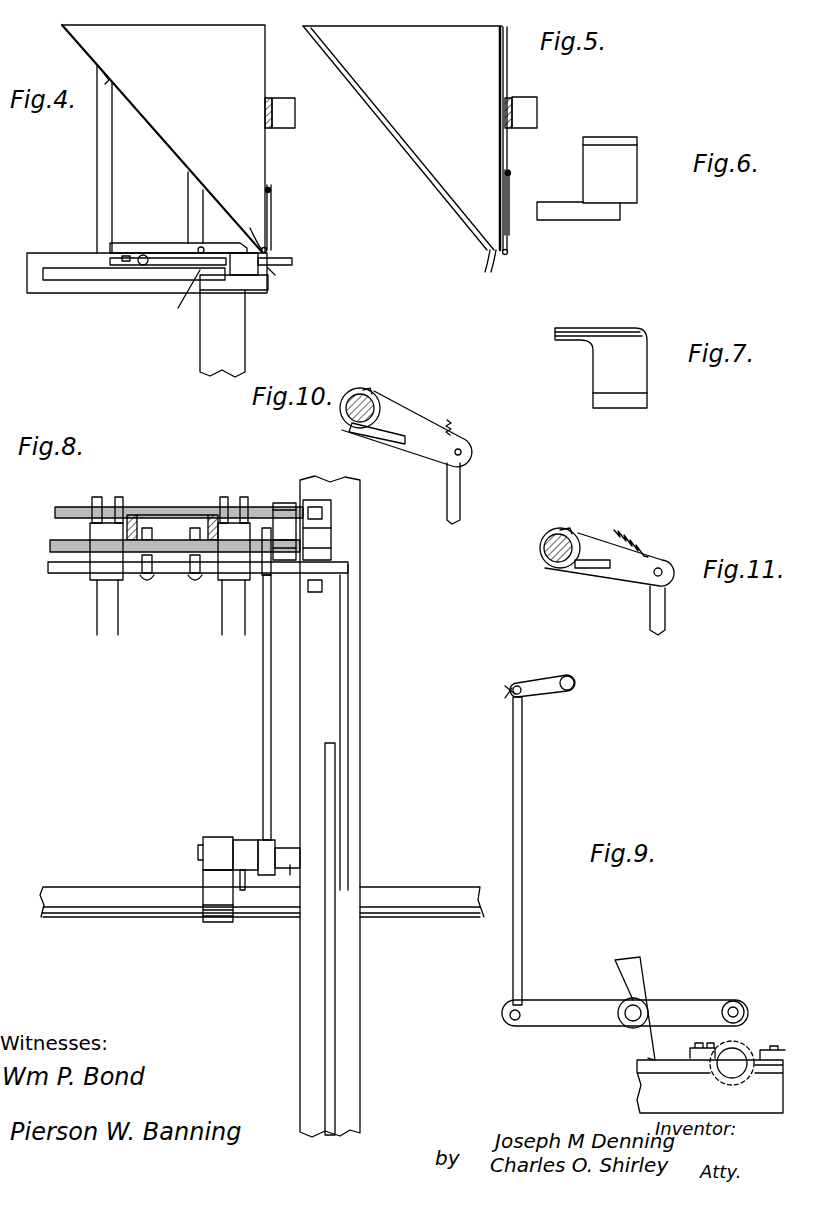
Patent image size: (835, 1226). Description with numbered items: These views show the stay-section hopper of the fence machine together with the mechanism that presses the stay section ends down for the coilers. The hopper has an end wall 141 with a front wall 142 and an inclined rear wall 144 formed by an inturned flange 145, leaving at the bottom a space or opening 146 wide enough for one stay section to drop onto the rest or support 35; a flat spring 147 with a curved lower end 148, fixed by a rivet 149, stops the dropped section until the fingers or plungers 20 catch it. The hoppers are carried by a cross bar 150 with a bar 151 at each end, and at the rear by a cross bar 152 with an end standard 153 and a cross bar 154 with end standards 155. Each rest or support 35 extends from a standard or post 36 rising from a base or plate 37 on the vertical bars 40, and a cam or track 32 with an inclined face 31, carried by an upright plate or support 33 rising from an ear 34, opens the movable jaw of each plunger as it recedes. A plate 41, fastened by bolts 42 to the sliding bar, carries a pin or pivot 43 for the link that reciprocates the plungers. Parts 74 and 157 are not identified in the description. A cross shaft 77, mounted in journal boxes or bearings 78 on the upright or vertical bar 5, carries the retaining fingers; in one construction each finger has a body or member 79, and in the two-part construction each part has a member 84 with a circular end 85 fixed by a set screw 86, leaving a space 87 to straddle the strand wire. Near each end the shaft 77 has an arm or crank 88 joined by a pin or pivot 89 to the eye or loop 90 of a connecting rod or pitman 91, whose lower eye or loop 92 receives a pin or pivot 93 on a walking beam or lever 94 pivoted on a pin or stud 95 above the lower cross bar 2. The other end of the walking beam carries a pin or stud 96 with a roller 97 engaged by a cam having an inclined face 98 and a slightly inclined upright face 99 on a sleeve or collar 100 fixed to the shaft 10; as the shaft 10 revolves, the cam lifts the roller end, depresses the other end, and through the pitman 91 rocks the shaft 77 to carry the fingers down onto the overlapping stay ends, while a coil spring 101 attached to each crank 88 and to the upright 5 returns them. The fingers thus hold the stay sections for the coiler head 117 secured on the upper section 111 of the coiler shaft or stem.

In FIG. 9, the lower cross bar 2 is at (711, 1079).
In FIG. 8, the upright or vertical bar 5 is at (350, 990).
In FIG. 8, the shaft 10 is at (155, 905).
In FIG. 9, the shaft 10 is at (732, 1063).
In FIG. 4, the fingers or plungers 20 is at (123, 243).
In FIG. 8, the fingers or plungers 20 is at (132, 515).
In FIG. 6, the inclined face 31 is at (634, 139).
In FIG. 7, the inclined face 31 is at (606, 328).
In FIG. 6, the cam or track 32 is at (608, 136).
In FIG. 4, the upright plate or support 33 is at (244, 264).
In FIG. 6, the upright plate or support 33 is at (610, 174).
In FIG. 7, the upright plate or support 33 is at (601, 368).
In FIG. 6, the ear 34 is at (605, 220).
In FIG. 7, the ear 34 is at (616, 405).
In FIG. 4, the rest or support 35 is at (292, 261).
In FIG. 4, the standard or post 36 is at (268, 285).
In FIG. 8, the standard or post 36 is at (190, 533).
In FIG. 4, the base or plate 37 is at (232, 283).
In FIG. 8, the base or plate 37 is at (145, 560).
In FIG. 4, the vertical bars 40 is at (222, 333).
In FIG. 8, the vertical bars 40 is at (165, 570).
In FIG. 4, the plate 41 is at (160, 265).
In FIG. 4, the bolts 42 is at (126, 262).
In FIG. 4, the pin or pivot 43 is at (143, 265).
In FIG. 4, the base 74 is at (35, 293).
In FIG. 4, the journal boxes or bearings 78 is at (65, 278).
In FIG. 4, the body or member 79 is at (182, 296).
In FIG. 10, the cross shaft 77 is at (352, 427).
In FIG. 11, the cross shaft 77 is at (556, 565).
In FIG. 8, the cross shaft 77 is at (262, 507).
In FIG. 9, the cross shaft 77 is at (574, 680).
In FIG. 10, the member 84 is at (385, 436).
In FIG. 11, the member 84 is at (596, 570).
In FIG. 8, the member 84 is at (210, 514).
In FIG. 10, the circular end 85 is at (378, 405).
In FIG. 11, the circular end 85 is at (585, 545).
In FIG. 8, the circular end 85 is at (216, 510).
In FIG. 10, the set screw 86 is at (378, 384).
In FIG. 11, the set screw 86 is at (572, 532).
In FIG. 8, the set screw 86 is at (223, 497).
In FIG. 8, the space 87 is at (103, 498).
In FIG. 10, the arm or crank 88 is at (407, 429).
In FIG. 11, the arm or crank 88 is at (609, 559).
In FIG. 8, the arm or crank 88 is at (284, 531).
In FIG. 9, the arm or crank 88 is at (548, 693).
In FIG. 10, the pin or pivot 89 is at (458, 452).
In FIG. 11, the pin or pivot 89 is at (662, 570).
In FIG. 8, the pin or pivot 89 is at (232, 552).
In FIG. 9, the pin or pivot 89 is at (518, 686).
In FIG. 10, the eye or loop 90 is at (465, 458).
In FIG. 11, the eye or loop 90 is at (665, 582).
In FIG. 8, the eye or loop 90 is at (265, 552).
In FIG. 9, the eye or loop 90 is at (502, 702).
In FIG. 10, the connecting rod or pitman 91 is at (460, 498).
In FIG. 11, the connecting rod or pitman 91 is at (665, 612).
In FIG. 8, the connecting rod or pitman 91 is at (271, 645).
In FIG. 9, the connecting rod or pitman 91 is at (522, 803).
In FIG. 8, the eye or loop 92 is at (268, 848).
In FIG. 9, the eye or loop 92 is at (521, 1002).
In FIG. 8, the pin or pivot 93 is at (245, 885).
In FIG. 9, the pin or pivot 93 is at (514, 1020).
In FIG. 8, the walking beam or lever 94 is at (250, 840).
In FIG. 9, the walking beam or lever 94 is at (625, 1013).
In FIG. 8, the pin or stud 95 is at (287, 868).
In FIG. 9, the pin or stud 95 is at (633, 1013).
In FIG. 8, the pin or stud 96 is at (198, 852).
In FIG. 9, the pin or stud 96 is at (735, 1010).
In FIG. 8, the roller 97 is at (218, 845).
In FIG. 9, the roller 97 is at (744, 1012).
In FIG. 8, the inclined face 98 is at (203, 878).
In FIG. 9, the inclined face 98 is at (748, 1045).
In FIG. 9, the upright face 99 is at (712, 1046).
In FIG. 8, the sleeve or collar 100 is at (218, 922).
In FIG. 9, the sleeve or collar 100 is at (712, 1098).
In FIG. 10, the coil spring 101 is at (453, 428).
In FIG. 11, the coil spring 101 is at (640, 538).
In FIG. 8, the upper section 111 is at (100, 608).
In FIG. 8, the coiler head 117 is at (96, 580).
In FIG. 4, the end wall 141 is at (163, 139).
In FIG. 5, the end wall 141 is at (405, 138).
In FIG. 4, the front wall 142 is at (268, 96).
In FIG. 5, the front wall 142 is at (513, 97).
In FIG. 5, the inclined rear wall 144 is at (420, 153).
In FIG. 5, the inturned flange 145 is at (430, 135).
In FIG. 4, the space or opening 146 is at (252, 229).
In FIG. 5, the space or opening 146 is at (490, 267).
In FIG. 4, the flat springs 147 is at (272, 215).
In FIG. 5, the flat springs 147 is at (510, 215).
In FIG. 4, the curved lower end 148 is at (267, 249).
In FIG. 5, the curved lower end 148 is at (508, 252).
In FIG. 4, the rivet 149 is at (160, 128).
In FIG. 5, the rivet 149 is at (511, 173).
In FIG. 4, the cross bar 150 is at (270, 128).
In FIG. 5, the cross bar 150 is at (512, 128).
In FIG. 4, the bar 151 is at (295, 113).
In FIG. 5, the bar 151 is at (537, 110).
In FIG. 4, the cross bar 152 is at (110, 78).
In FIG. 4, the end standard 153 is at (112, 170).
In FIG. 4, the cross bar 154 is at (197, 178).
In FIG. 4, the end standards 155 is at (188, 218).
In FIG. 4, the stop 157 is at (275, 275).